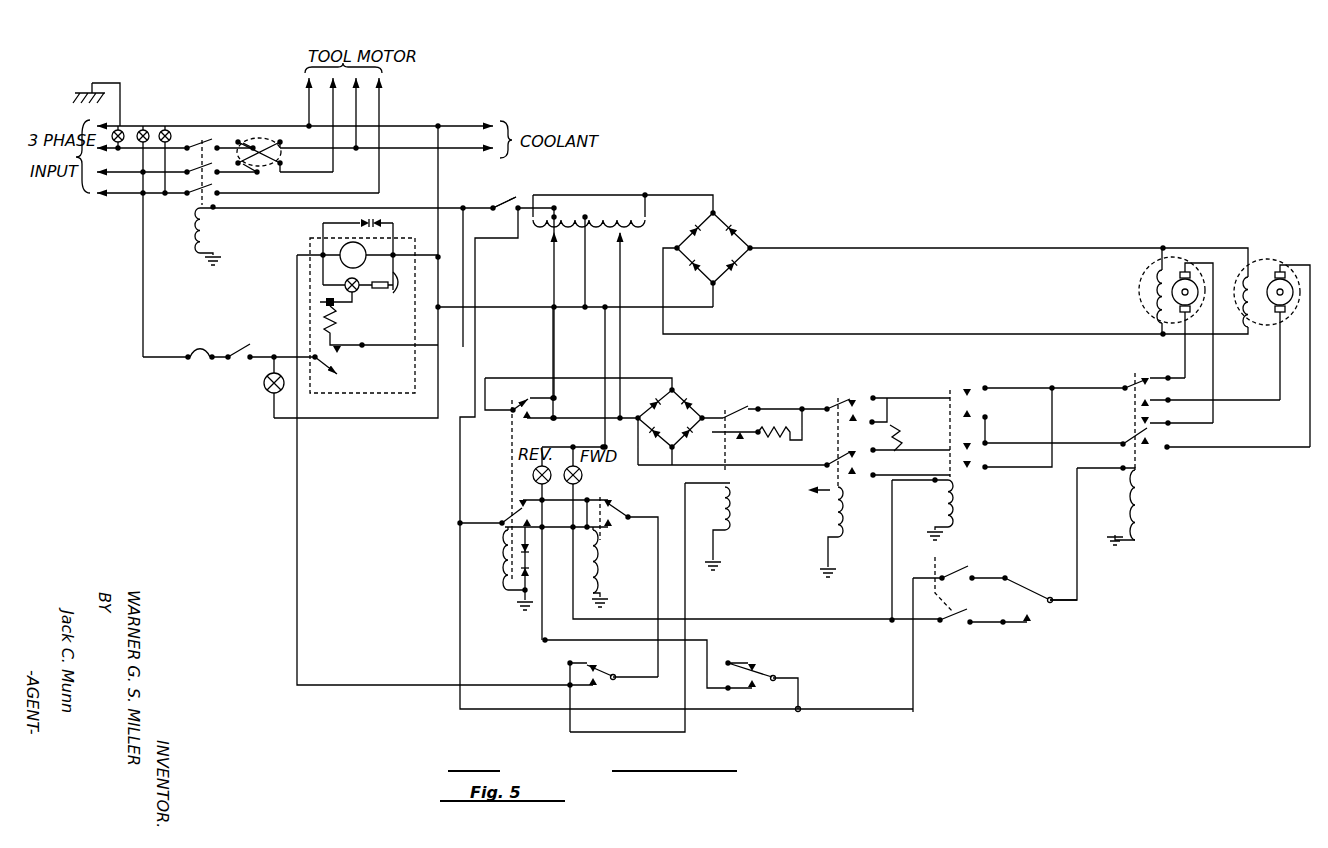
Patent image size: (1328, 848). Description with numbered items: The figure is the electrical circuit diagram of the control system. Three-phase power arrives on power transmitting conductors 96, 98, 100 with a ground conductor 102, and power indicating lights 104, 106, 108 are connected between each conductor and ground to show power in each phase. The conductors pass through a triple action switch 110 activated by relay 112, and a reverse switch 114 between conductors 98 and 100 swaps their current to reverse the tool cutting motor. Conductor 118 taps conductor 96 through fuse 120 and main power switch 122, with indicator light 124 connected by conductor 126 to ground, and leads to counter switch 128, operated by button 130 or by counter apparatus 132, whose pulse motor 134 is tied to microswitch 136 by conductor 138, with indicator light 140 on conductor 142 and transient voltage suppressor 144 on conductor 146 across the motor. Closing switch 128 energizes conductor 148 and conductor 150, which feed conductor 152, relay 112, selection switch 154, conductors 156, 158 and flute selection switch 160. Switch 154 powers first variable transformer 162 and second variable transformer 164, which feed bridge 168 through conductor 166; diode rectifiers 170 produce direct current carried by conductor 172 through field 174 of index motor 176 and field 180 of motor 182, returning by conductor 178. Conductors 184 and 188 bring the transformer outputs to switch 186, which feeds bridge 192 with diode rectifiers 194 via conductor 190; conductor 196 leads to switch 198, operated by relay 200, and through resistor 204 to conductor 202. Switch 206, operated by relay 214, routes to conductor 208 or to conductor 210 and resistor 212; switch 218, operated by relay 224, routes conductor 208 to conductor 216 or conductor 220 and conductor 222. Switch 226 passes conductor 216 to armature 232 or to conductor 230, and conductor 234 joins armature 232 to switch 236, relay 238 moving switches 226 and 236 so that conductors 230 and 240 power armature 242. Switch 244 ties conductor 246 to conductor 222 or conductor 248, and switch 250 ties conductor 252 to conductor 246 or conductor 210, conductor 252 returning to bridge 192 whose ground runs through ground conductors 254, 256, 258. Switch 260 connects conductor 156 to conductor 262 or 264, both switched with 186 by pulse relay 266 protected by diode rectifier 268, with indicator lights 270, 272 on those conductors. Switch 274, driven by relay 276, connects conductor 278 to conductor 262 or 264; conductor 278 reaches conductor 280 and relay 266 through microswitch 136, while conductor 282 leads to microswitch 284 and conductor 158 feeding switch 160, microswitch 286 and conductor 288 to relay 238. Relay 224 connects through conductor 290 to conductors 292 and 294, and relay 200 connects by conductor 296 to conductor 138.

The power transmitting conductor 96 is at (131, 194).
The power transmitting conductor 98 is at (113, 172).
The power transmitting conductor 100 is at (122, 149).
The ground conductor 102 is at (188, 137).
The power indicating light 104 is at (172, 128).
The power indicating light 106 is at (148, 128).
The power indicating light 108 is at (122, 127).
The triple action switch 110 is at (185, 222).
The relay 112 is at (204, 268).
The reverse switch 114 is at (265, 112).
The conductor 118 is at (160, 358).
The fuse 120 is at (200, 360).
The main power switch 122 is at (244, 345).
The indicator light 124 is at (267, 391).
The conductor 126 is at (347, 420).
The counter switch 128 is at (346, 366).
The button 130 is at (328, 299).
The counter apparatus 132 is at (385, 398).
The pulse motor 134 is at (368, 250).
The microswitch 136 is at (601, 665).
The conductor 138 is at (297, 535).
The indicator light 140 is at (349, 325).
The conductor 142 is at (367, 295).
The transient voltage suppressor 144 is at (385, 222).
The conductor 146 is at (323, 230).
The conductor 148 is at (462, 349).
The conductor 150 is at (517, 708).
The conductor 152 is at (233, 209).
The selection switch 154 is at (519, 195).
The power transmitting conductor 156 is at (452, 533).
The conductor 158 is at (805, 693).
The flute selection switch 160 is at (962, 631).
The first variable transformer 162 is at (545, 240).
The second variable transformer 164 is at (652, 212).
The conductor 166 is at (600, 196).
The bridge 168 is at (736, 222).
The diode rectifier 170 is at (745, 222).
The conductor 172 is at (1006, 248).
The field 174 is at (1157, 275).
The index motor 176 is at (1170, 237).
The conductor 178 is at (955, 292).
The field 180 is at (1249, 270).
The motor 182 is at (1270, 245).
The conductor 184 is at (553, 333).
The switch 186 is at (510, 413).
The conductor 188 is at (621, 347).
The conductor 190 is at (562, 382).
The bridge 192 is at (698, 383).
The diode rectifier 194 is at (692, 401).
The conductor 196 is at (712, 437).
The switch 198 is at (749, 404).
The relay 200 is at (733, 532).
The conductor 202 is at (808, 407).
The resistor 204 is at (757, 441).
The switch 206 is at (861, 394).
The conductor 208 is at (938, 397).
The conductor 210 is at (887, 397).
The resistor 212 is at (917, 431).
The relay 214 is at (843, 542).
The conductor 216 is at (1077, 386).
The switch 218 is at (976, 386).
The conductor 220 is at (988, 432).
The conductor 222 is at (1063, 440).
The relay 224 is at (958, 526).
The switch 226 is at (1138, 372).
The conductor 230 is at (1224, 403).
The armature 232 is at (1187, 268).
The conductor 234 is at (1214, 370).
The switch 236 is at (1148, 457).
The relay 238 is at (1113, 532).
The conductor 240 is at (1270, 452).
The armature 242 is at (1287, 270).
The switch 244 is at (958, 477).
The conductor 246 is at (933, 453).
The conductor 248 is at (1040, 473).
The switch 250 is at (832, 458).
The conductor 252 is at (750, 468).
The ground conductor 254 is at (695, 458).
The ground conductor 256 is at (604, 350).
The ground conductor 258 is at (493, 309).
The switch 260 is at (505, 529).
The conductor 262 is at (558, 513).
The conductor 264 is at (565, 549).
The pulse relay 266 is at (503, 597).
The diode rectifier 268 is at (535, 578).
The indicator light 270 is at (533, 478).
The indicator light 272 is at (583, 480).
The switch 274 is at (616, 510).
The relay 276 is at (605, 547).
The conductor 278 is at (606, 592).
The conductor 280 is at (563, 662).
The conductor 282 is at (675, 648).
The microswitch 284 is at (763, 697).
The microswitch 286 is at (1030, 630).
The conductor 288 is at (1077, 595).
The conductor 290 is at (892, 530).
The conductor 292 is at (783, 620).
The conductor 294 is at (920, 625).
The conductor 296 is at (690, 592).